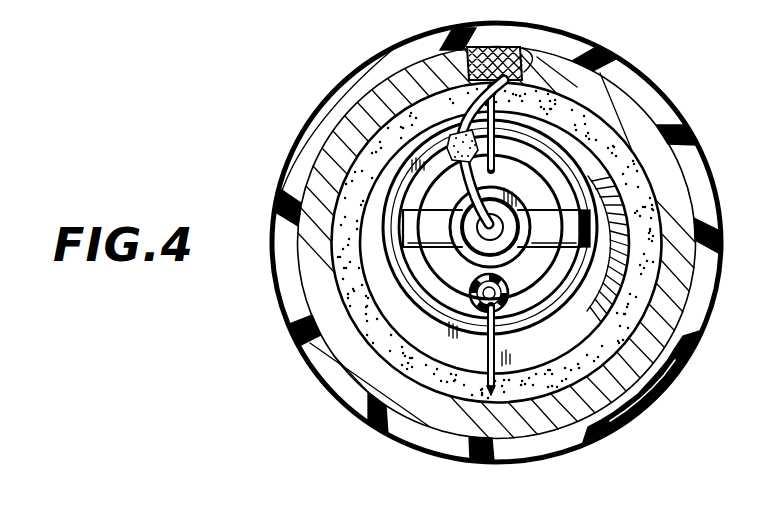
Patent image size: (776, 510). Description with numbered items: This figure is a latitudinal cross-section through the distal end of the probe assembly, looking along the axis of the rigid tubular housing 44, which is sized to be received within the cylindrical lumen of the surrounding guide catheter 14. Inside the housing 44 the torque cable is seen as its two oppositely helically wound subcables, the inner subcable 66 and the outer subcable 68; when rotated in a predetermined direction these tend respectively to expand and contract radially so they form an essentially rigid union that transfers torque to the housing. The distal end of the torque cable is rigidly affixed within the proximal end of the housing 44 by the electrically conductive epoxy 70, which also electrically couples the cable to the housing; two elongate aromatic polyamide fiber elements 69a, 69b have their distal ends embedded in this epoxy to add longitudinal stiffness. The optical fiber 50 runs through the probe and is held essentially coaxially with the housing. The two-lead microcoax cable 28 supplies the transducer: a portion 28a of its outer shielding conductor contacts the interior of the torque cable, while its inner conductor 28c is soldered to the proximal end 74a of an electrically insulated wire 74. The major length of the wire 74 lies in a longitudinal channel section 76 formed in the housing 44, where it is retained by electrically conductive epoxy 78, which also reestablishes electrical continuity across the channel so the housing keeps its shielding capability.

The guide catheter 14 is at (643, 93).
The microcoax cable 28 is at (511, 256).
The outer conductor portion 28a is at (496, 228).
The inner conductor 28c is at (420, 171).
The tubular housing 44 is at (690, 300).
The optical fiber 50 is at (508, 297).
The inner subcable 66 is at (586, 192).
The outer subcable 68 is at (602, 166).
The elongate fiber element 69a is at (513, 116).
The elongate fiber element 69b is at (500, 378).
The electrically conductive epoxy 70 is at (704, 240).
The electrically insulated wire 74 is at (498, 50).
The proximal end of wire 74a is at (462, 114).
The longitudinal channel section 76 is at (526, 48).
The electrically conductive epoxy 78 is at (456, 29).